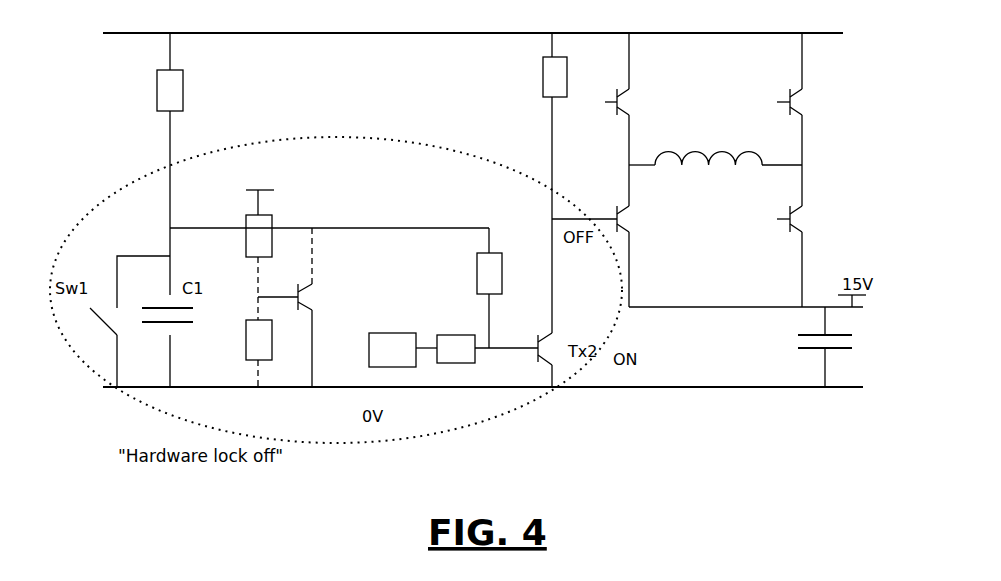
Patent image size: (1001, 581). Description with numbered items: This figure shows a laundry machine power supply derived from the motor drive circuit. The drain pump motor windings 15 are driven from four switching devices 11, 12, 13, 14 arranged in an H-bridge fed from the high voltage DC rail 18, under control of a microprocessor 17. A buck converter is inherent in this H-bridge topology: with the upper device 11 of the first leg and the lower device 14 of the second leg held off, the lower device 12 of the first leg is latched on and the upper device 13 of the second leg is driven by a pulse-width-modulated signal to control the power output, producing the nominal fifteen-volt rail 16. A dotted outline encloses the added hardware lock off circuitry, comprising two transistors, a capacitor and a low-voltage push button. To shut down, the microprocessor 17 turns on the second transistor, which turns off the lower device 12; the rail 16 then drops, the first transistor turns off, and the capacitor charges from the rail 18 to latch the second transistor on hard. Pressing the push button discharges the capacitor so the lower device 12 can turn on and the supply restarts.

The A+ switching device 11 is at (634, 99).
The A- switching device 12 is at (638, 236).
The B+ switching device 13 is at (808, 99).
The B- switching device 14 is at (806, 236).
The motor windings 15 is at (715, 164).
The 15 v rail 16 is at (295, 279).
The microprocessor 17 is at (398, 333).
The high voltage DC rail 18 is at (503, 33).